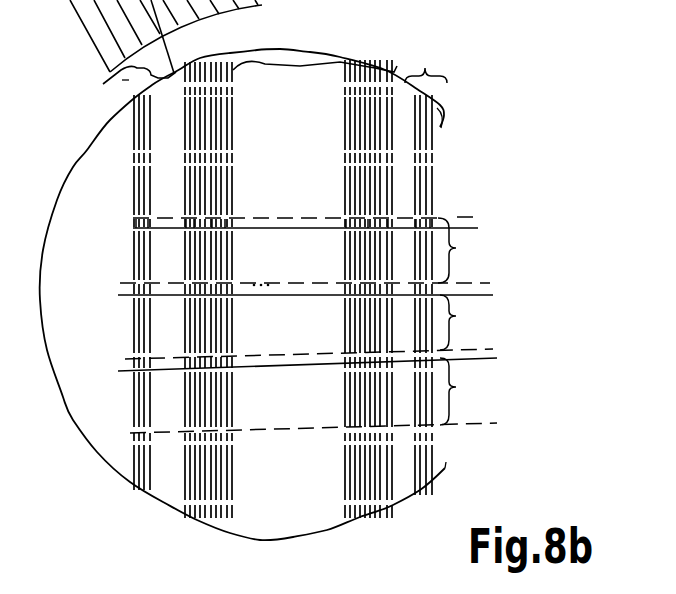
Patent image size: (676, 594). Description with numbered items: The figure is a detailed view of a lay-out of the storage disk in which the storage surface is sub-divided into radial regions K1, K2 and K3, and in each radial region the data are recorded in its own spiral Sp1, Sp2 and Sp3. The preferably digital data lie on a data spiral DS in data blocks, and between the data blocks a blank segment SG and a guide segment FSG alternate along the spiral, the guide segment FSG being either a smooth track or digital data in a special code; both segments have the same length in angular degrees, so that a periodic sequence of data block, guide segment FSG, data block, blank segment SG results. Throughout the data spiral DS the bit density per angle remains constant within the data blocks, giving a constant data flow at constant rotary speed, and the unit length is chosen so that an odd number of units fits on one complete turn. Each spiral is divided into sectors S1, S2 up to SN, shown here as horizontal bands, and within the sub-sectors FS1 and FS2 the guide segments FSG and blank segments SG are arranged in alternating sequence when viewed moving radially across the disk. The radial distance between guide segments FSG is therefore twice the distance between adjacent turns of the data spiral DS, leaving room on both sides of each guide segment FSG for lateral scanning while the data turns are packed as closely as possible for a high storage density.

The spiral Sp1 is at (124, 89).
The spiral Sp2 is at (257, 58).
The spiral Sp3 is at (426, 268).
The radial region K1 is at (243, 294).
The radial region K2 is at (269, 238).
The radial region K3 is at (464, 123).
The guide segment FSG is at (232, 157).
The data spiral DS is at (390, 187).
The blank segment SG is at (206, 221).
The sector SN is at (314, 250).
The sector S1 is at (467, 322).
The sector S2 is at (469, 391).
The sub-sector FS1 is at (313, 287).
The sub-sector FS2 is at (306, 367).